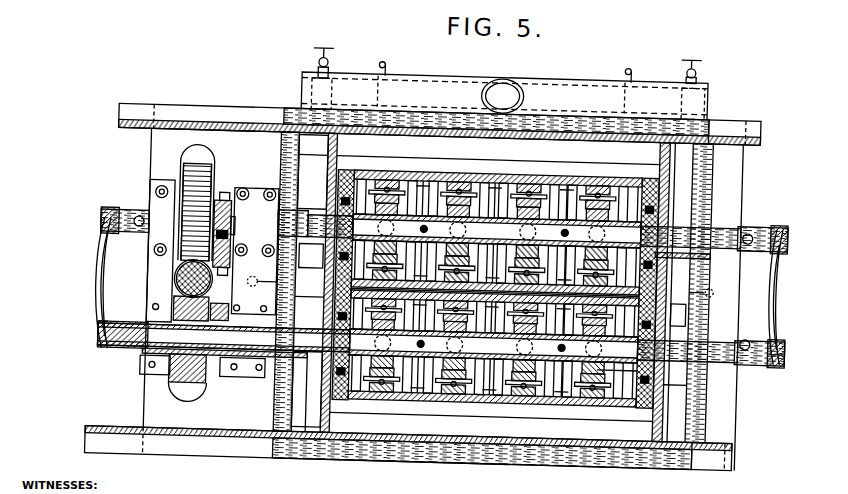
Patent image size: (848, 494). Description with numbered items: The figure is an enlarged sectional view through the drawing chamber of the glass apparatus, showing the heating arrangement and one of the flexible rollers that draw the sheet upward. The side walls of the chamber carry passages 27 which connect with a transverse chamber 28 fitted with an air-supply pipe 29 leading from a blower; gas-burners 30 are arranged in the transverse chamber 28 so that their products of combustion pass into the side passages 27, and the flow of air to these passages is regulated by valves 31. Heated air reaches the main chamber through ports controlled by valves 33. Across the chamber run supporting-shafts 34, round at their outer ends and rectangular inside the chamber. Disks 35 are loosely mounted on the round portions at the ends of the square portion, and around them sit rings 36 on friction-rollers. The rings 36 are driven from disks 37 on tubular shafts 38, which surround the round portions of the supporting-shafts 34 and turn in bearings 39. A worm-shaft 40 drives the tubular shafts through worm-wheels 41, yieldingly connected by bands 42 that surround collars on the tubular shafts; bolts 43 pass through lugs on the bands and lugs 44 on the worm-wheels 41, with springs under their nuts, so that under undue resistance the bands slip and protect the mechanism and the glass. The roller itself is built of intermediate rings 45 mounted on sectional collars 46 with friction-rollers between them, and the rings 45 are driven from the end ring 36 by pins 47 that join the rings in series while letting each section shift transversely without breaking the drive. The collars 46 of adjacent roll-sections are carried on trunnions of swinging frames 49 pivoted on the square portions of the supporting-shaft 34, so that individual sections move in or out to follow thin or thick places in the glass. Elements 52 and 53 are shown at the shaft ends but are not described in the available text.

The passages 27 is at (290, 418).
The transverse chamber 28 is at (432, 83).
The air-supply pipe 29 is at (502, 82).
The gas-burners 30 is at (296, 99).
The valves 31 is at (379, 62).
The valves 33 is at (324, 274).
The supporting-shafts 34 is at (249, 392).
The disks 35 is at (755, 386).
The rings 36 is at (345, 172).
The disks 37 is at (654, 404).
The tubular shafts 38 is at (309, 283).
The bearings 39 is at (213, 403).
The worm-shaft 40 is at (176, 289).
The worm-wheels 41 is at (180, 175).
The bands 42 is at (232, 206).
The bolts 43 is at (226, 198).
The lugs 44 is at (244, 218).
The intermediate rings 45 is at (450, 181).
The collars 46 is at (412, 380).
The pins 47 is at (372, 181).
The swinging frames 49 is at (575, 365).
The lever 52 is at (101, 238).
The lever 53 is at (100, 333).